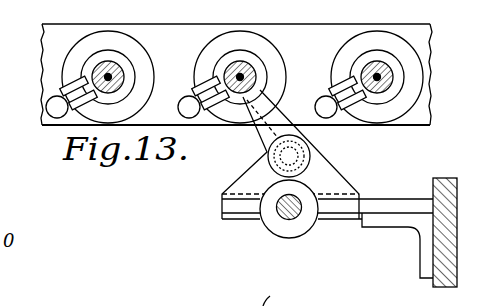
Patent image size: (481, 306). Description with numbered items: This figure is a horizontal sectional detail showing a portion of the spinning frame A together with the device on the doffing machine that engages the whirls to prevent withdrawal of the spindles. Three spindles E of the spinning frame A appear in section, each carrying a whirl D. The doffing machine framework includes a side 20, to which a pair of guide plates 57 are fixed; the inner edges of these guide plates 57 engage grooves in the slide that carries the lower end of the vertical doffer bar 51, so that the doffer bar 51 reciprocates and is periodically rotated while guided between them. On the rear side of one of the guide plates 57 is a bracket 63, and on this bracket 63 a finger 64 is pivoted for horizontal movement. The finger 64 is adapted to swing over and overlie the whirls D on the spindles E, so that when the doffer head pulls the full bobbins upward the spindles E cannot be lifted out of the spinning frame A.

The spinning frame A is at (58, 48).
The spindle E is at (226, 72).
The whirl D is at (361, 68).
The finger 64 is at (263, 134).
The bracket 63 is at (326, 173).
The guide plate 57 is at (226, 203).
The doffer bar 51 is at (286, 213).
The side 20 is at (433, 183).